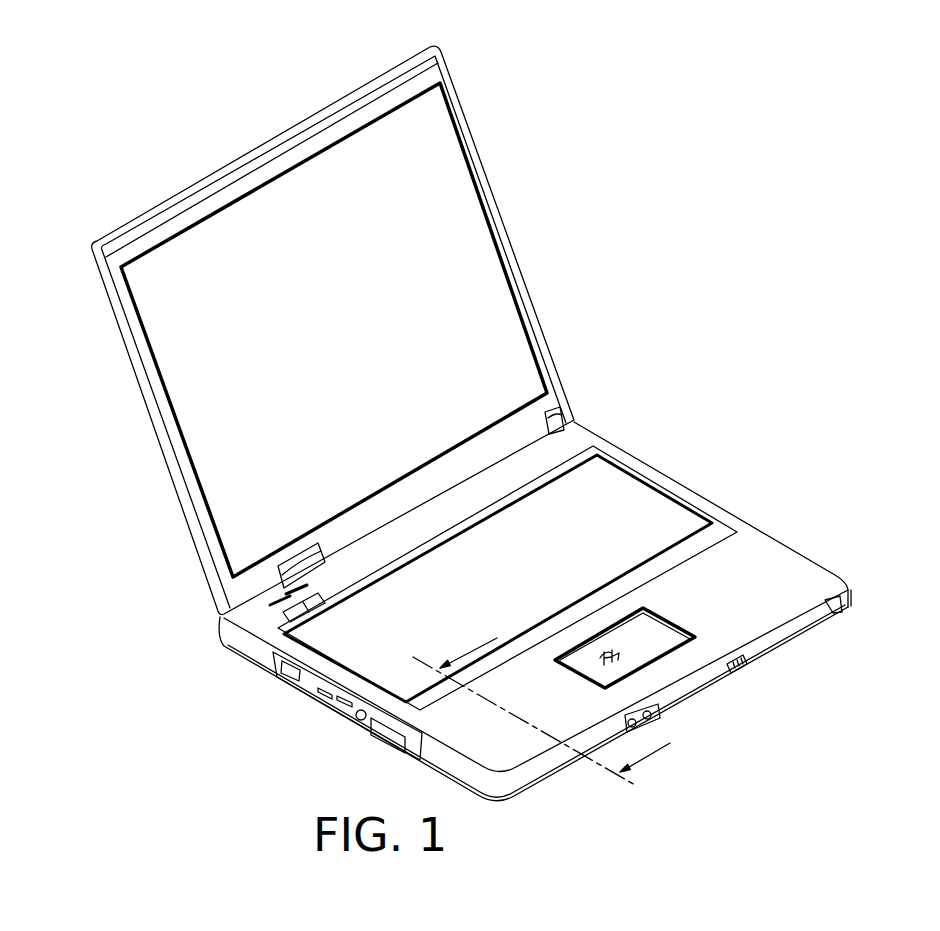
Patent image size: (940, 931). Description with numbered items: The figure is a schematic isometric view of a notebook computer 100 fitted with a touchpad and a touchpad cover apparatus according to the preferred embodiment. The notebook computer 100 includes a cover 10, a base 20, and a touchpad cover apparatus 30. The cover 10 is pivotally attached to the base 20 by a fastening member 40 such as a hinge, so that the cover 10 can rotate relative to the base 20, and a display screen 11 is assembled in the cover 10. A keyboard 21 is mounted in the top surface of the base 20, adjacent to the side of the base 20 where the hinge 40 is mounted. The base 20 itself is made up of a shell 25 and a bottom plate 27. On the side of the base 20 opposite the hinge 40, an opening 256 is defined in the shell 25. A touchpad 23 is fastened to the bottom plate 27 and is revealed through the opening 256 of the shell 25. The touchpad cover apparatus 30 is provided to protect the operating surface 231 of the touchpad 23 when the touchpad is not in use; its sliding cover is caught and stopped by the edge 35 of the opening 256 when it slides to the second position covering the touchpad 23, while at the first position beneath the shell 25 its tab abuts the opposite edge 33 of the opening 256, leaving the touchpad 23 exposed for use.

The notebook computer 100 is at (596, 67).
The cover 10 is at (513, 263).
The display screen 11 is at (452, 218).
The fastening member 40 is at (567, 418).
The base 20 is at (790, 444).
The keyboard 21 is at (663, 523).
The touchpad 23 is at (643, 635).
The shell 25 is at (800, 587).
The bottom plate 27 is at (814, 633).
The edge 35 is at (678, 627).
The operating surface 231 is at (657, 642).
The touchpad cover apparatus 30 is at (615, 670).
The edge 33 is at (570, 650).
The opening 256 is at (578, 670).